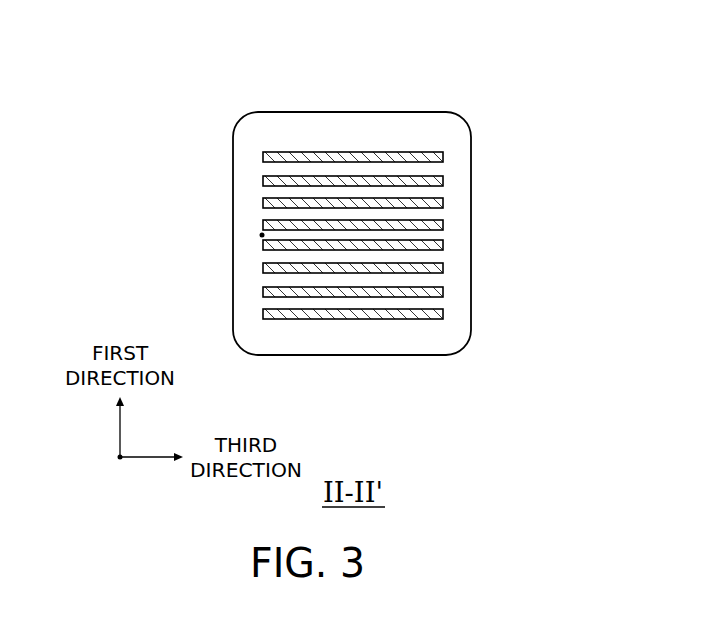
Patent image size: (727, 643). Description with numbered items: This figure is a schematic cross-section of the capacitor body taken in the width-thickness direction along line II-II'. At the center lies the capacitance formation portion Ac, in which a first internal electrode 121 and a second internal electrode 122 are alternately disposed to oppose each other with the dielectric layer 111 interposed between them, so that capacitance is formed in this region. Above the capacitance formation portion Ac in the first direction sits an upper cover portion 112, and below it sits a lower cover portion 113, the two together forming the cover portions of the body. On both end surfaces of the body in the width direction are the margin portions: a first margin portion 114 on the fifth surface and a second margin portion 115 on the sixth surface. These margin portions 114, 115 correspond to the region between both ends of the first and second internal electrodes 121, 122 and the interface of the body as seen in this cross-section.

The dielectric layer 111 is at (347, 234).
The upper cover portion 112 is at (348, 126).
The lower cover portion 113 is at (350, 344).
The first margin portion 114 is at (245, 267).
The second margin portion 115 is at (467, 263).
The first internal electrode 121 is at (437, 152).
The second internal electrode 122 is at (437, 180).
The capacitance formation portion Ac is at (262, 235).